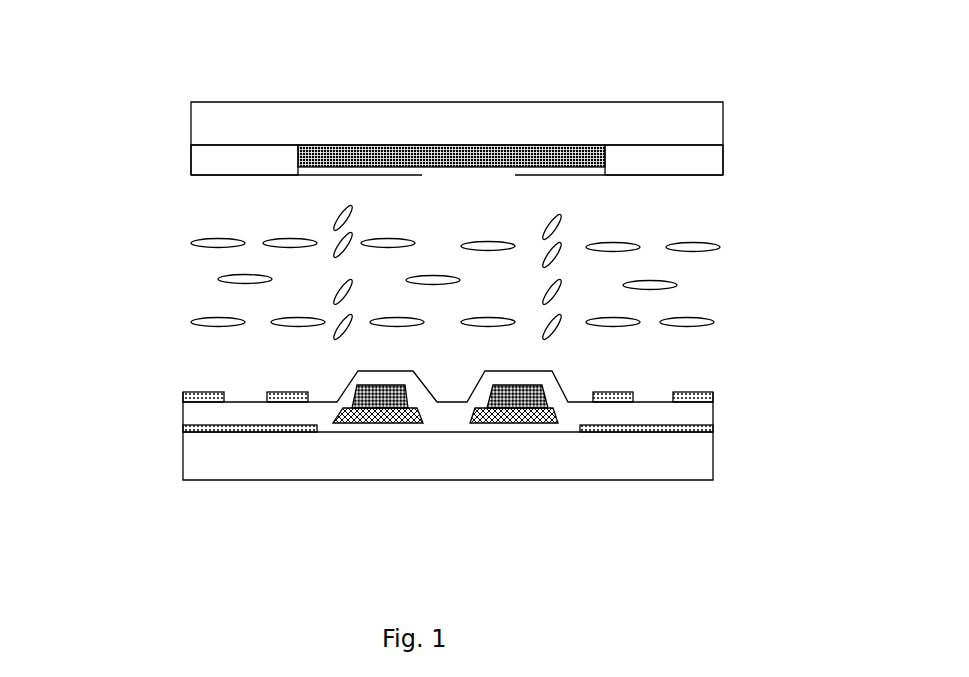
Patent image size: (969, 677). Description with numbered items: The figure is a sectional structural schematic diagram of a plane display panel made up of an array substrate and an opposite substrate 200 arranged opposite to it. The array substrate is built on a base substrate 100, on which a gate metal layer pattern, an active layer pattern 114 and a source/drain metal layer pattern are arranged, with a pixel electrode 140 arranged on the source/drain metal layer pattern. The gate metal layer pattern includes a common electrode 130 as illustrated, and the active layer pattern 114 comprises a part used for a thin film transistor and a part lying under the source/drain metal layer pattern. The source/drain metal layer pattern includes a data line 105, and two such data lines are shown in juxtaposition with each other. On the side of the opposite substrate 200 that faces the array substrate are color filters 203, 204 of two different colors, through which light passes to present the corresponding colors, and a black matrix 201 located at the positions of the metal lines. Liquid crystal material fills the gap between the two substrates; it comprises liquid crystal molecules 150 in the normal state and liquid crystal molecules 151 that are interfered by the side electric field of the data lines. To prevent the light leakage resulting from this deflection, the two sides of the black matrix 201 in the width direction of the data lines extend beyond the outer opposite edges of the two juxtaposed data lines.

The base substrate 100 is at (703, 468).
The data line 105 is at (542, 420).
The active layer pattern 114 is at (535, 420).
The common electrode 130 is at (713, 428).
The pixel electrode 140 is at (713, 395).
The liquid crystal molecules in normal state 150 is at (700, 247).
The liquid crystal molecules interfered by the side electric field 151 is at (338, 330).
The opposite substrate 200 is at (225, 120).
The black matrix 201 is at (452, 145).
The color filter 203 is at (227, 153).
The color filter 204 is at (704, 168).